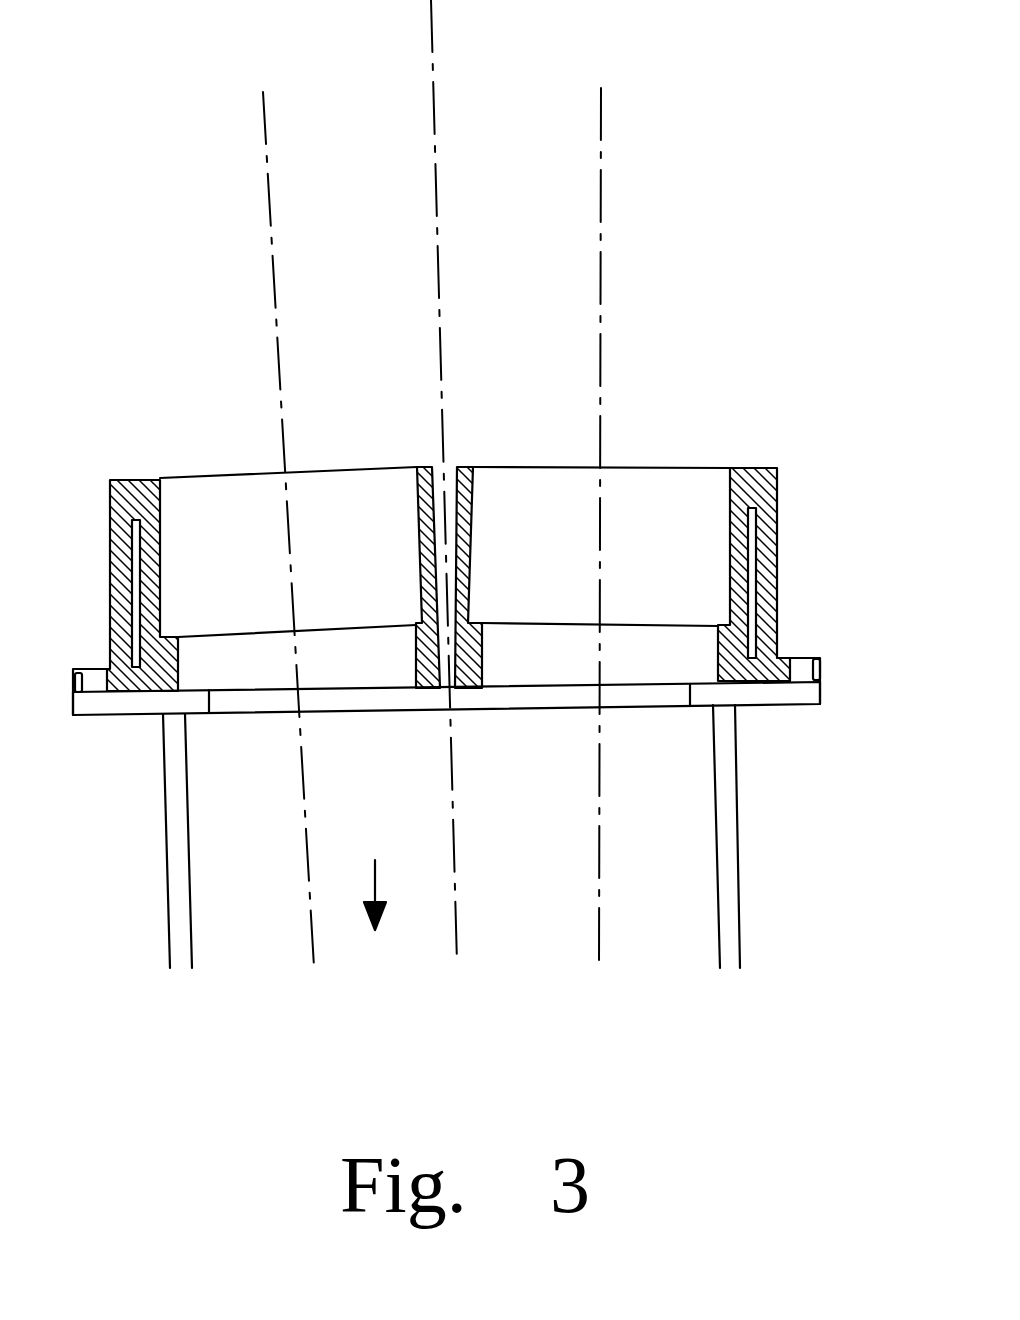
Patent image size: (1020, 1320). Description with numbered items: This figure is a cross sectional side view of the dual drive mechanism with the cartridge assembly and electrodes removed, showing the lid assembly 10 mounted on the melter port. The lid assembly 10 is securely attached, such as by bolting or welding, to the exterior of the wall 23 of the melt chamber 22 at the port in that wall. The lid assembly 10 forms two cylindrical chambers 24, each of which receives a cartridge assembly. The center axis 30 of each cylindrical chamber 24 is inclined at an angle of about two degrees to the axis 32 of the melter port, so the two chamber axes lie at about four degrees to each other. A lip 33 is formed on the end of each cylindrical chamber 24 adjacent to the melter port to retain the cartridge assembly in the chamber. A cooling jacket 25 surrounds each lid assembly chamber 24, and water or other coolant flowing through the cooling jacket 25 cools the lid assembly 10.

The lid assembly 10 is at (122, 472).
The melt chamber 22 is at (375, 873).
The wall 23 is at (712, 722).
The cylindrical chamber 24 is at (229, 502).
The cooling jacket 25 is at (752, 568).
The center axis 30 is at (266, 193).
The axis 32 is at (432, 22).
The lip 33 is at (175, 636).